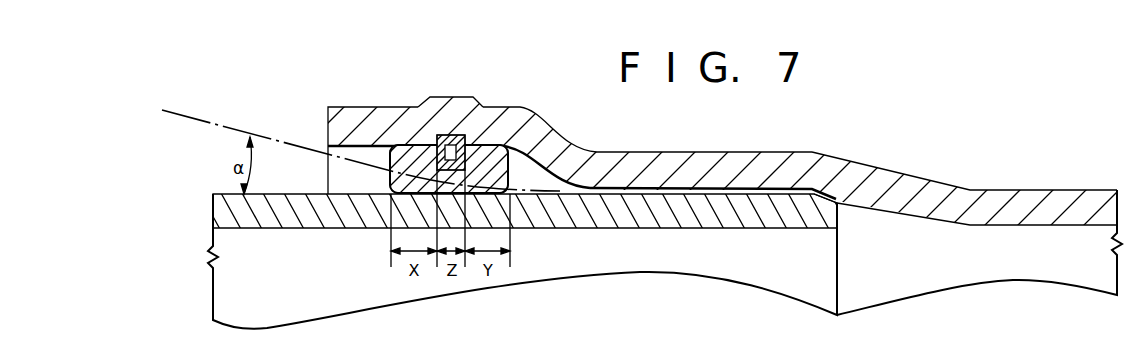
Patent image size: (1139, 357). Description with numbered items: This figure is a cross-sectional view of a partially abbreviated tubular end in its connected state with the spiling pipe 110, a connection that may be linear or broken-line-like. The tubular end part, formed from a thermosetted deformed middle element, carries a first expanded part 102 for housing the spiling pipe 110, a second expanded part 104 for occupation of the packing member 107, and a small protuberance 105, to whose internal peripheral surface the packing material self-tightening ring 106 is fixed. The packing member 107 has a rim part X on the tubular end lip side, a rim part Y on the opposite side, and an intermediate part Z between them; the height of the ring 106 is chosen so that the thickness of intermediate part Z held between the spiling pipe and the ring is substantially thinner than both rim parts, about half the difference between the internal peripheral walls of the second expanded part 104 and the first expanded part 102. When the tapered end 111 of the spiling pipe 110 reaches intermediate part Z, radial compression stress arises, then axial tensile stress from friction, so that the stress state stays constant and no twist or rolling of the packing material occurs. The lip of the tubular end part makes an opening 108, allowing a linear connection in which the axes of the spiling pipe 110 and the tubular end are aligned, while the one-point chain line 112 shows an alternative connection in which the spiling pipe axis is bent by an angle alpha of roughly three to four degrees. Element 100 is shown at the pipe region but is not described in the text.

The magnetic tape 100 is at (1030, 190).
The first expanded part 102 is at (705, 152).
The second expanded part 104 is at (375, 107).
The small protuberance 105 is at (445, 97).
The packing material self-tightening ring 106 is at (475, 133).
The packing member 107 is at (509, 172).
The opening 108 is at (357, 147).
The spiling pipe 110 is at (763, 228).
The tapered end 111 is at (840, 199).
The one-point chain line 112 is at (250, 136).